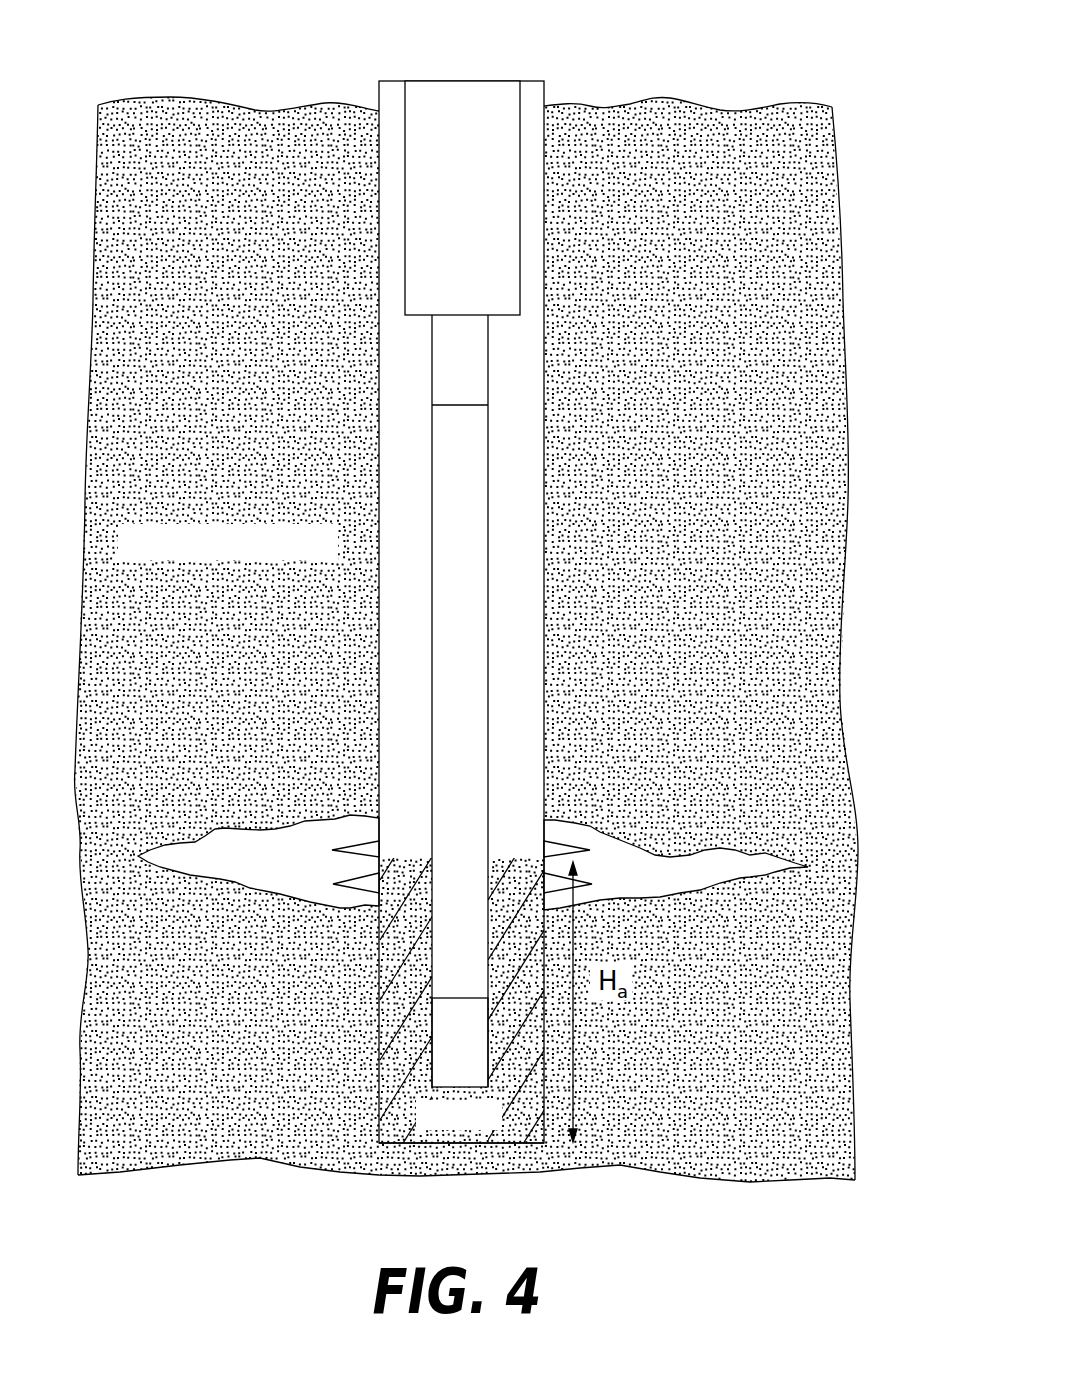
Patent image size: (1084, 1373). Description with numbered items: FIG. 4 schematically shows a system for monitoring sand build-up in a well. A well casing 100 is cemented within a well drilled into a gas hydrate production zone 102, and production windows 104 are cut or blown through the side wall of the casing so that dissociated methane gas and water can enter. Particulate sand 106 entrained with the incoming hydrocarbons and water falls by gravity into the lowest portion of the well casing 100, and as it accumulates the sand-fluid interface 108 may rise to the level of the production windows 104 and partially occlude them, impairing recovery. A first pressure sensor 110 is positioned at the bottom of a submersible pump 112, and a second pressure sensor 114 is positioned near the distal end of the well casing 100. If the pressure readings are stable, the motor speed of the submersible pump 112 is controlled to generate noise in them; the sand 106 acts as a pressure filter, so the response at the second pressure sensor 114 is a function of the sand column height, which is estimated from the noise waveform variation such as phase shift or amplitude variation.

The well casing 100 is at (544, 81).
The gas hydrate production zone 102 is at (689, 556).
The production windows 104 is at (542, 843).
The sand 106 is at (545, 1143).
The sand-fluid interface 108 is at (416, 856).
The first pressure sensor 110 is at (488, 392).
The submersible pump 112 is at (420, 81).
The second pressure sensor 114 is at (478, 997).